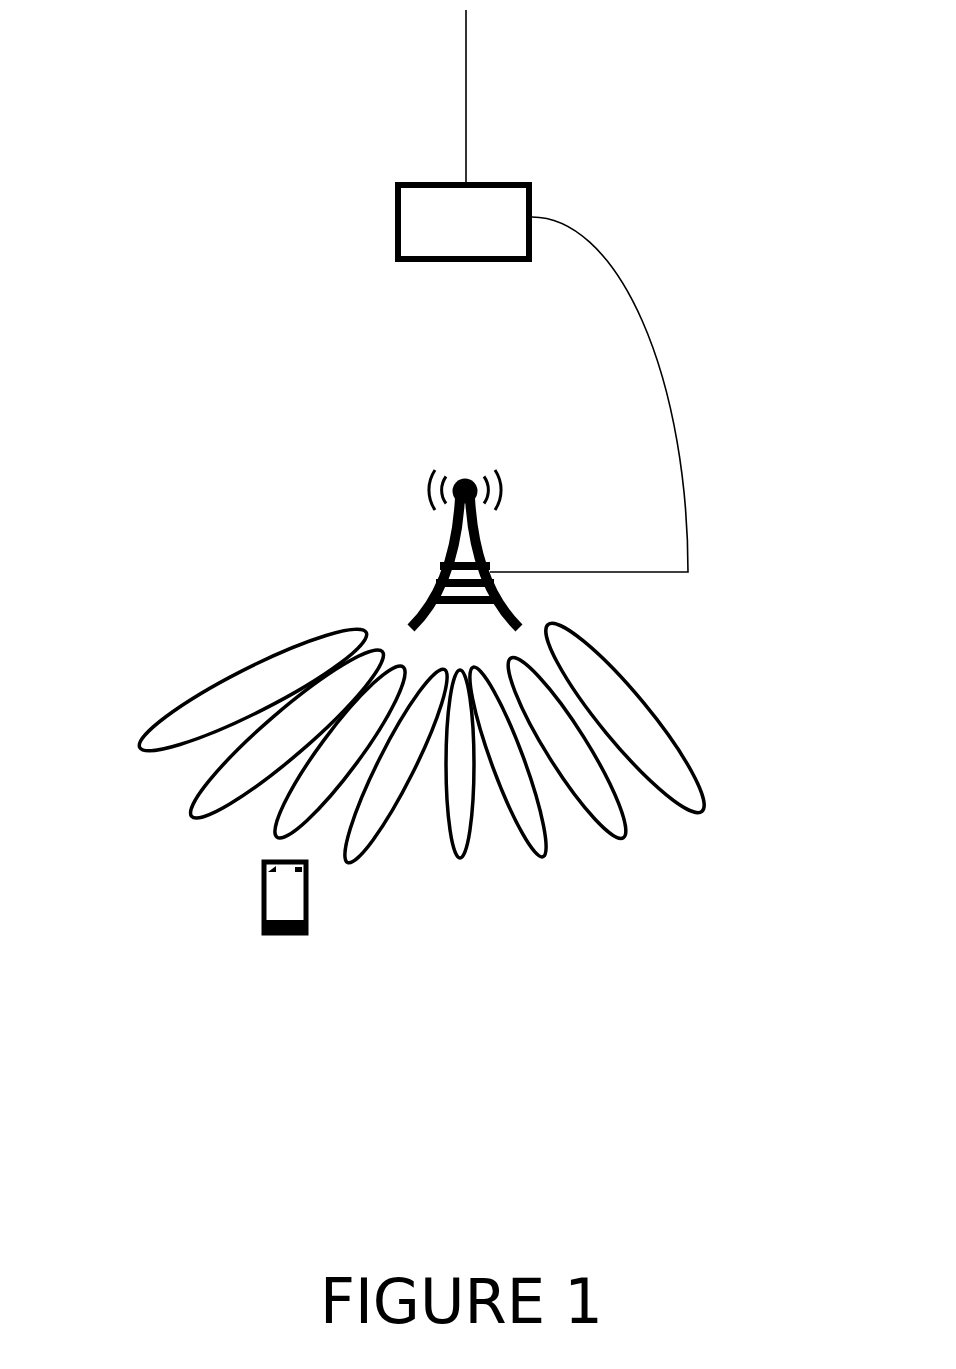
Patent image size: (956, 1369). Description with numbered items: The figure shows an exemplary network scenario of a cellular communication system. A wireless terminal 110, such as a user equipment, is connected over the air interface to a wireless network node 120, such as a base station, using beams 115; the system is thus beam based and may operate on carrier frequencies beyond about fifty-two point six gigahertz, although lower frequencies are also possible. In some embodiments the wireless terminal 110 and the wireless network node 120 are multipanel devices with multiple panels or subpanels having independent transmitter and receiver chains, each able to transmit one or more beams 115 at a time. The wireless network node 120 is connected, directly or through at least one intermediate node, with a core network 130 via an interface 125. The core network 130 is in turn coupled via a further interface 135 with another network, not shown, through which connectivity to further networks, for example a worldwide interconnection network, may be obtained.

The wireless terminal 110 is at (264, 935).
The beams 115 is at (218, 680).
The wireless network node 120 is at (482, 548).
The interface 125 is at (660, 355).
The core network 130 is at (488, 237).
The interface 135 is at (466, 122).